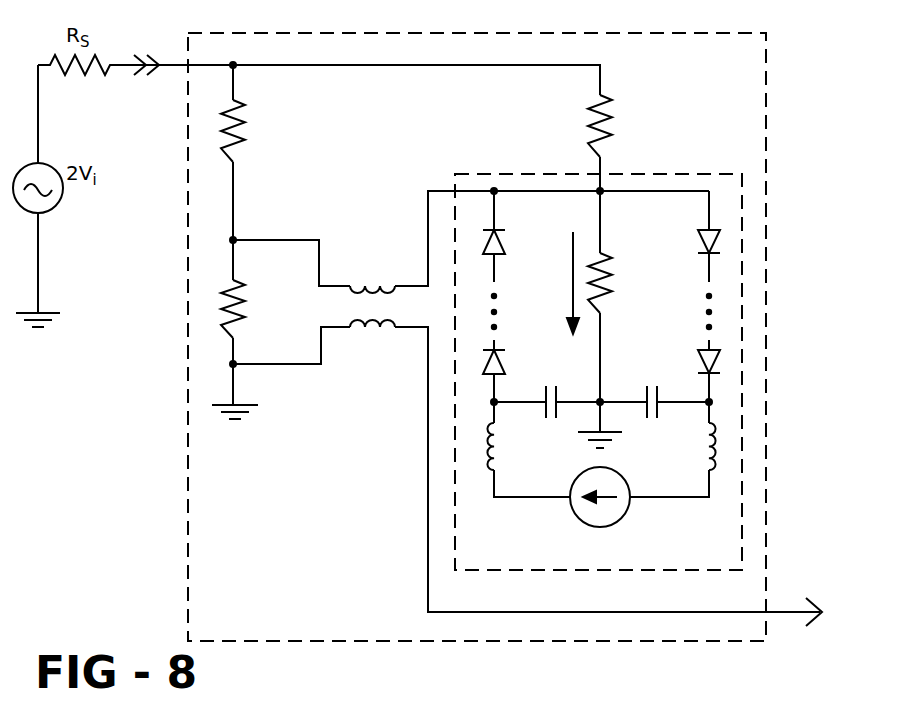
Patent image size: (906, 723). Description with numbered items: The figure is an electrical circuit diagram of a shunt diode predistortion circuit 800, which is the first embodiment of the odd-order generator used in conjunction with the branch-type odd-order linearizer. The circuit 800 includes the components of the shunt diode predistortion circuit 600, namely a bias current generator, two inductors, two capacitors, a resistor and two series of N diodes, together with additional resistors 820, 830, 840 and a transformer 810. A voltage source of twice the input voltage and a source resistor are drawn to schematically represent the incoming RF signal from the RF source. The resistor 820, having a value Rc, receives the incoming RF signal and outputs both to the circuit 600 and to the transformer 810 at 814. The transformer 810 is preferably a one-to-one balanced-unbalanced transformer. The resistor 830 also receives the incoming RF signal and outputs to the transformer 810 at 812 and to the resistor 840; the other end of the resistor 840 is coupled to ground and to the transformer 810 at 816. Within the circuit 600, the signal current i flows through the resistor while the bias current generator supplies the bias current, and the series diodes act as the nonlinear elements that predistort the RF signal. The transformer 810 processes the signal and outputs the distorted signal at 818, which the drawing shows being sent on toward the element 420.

The shunt diode predistortion circuit 800 is at (590, 640).
The shunt diode predistortion circuit 600 is at (523, 172).
The transformer 810 is at (366, 325).
The transformer terminal 812 is at (327, 282).
The transformer terminal 814 is at (425, 280).
The transformer terminal 816 is at (325, 335).
The transformer output 818 is at (425, 335).
The resistor 820 is at (604, 150).
The resistor 830 is at (240, 145).
The resistor 840 is at (224, 317).
The odd-order generator 420 is at (838, 611).